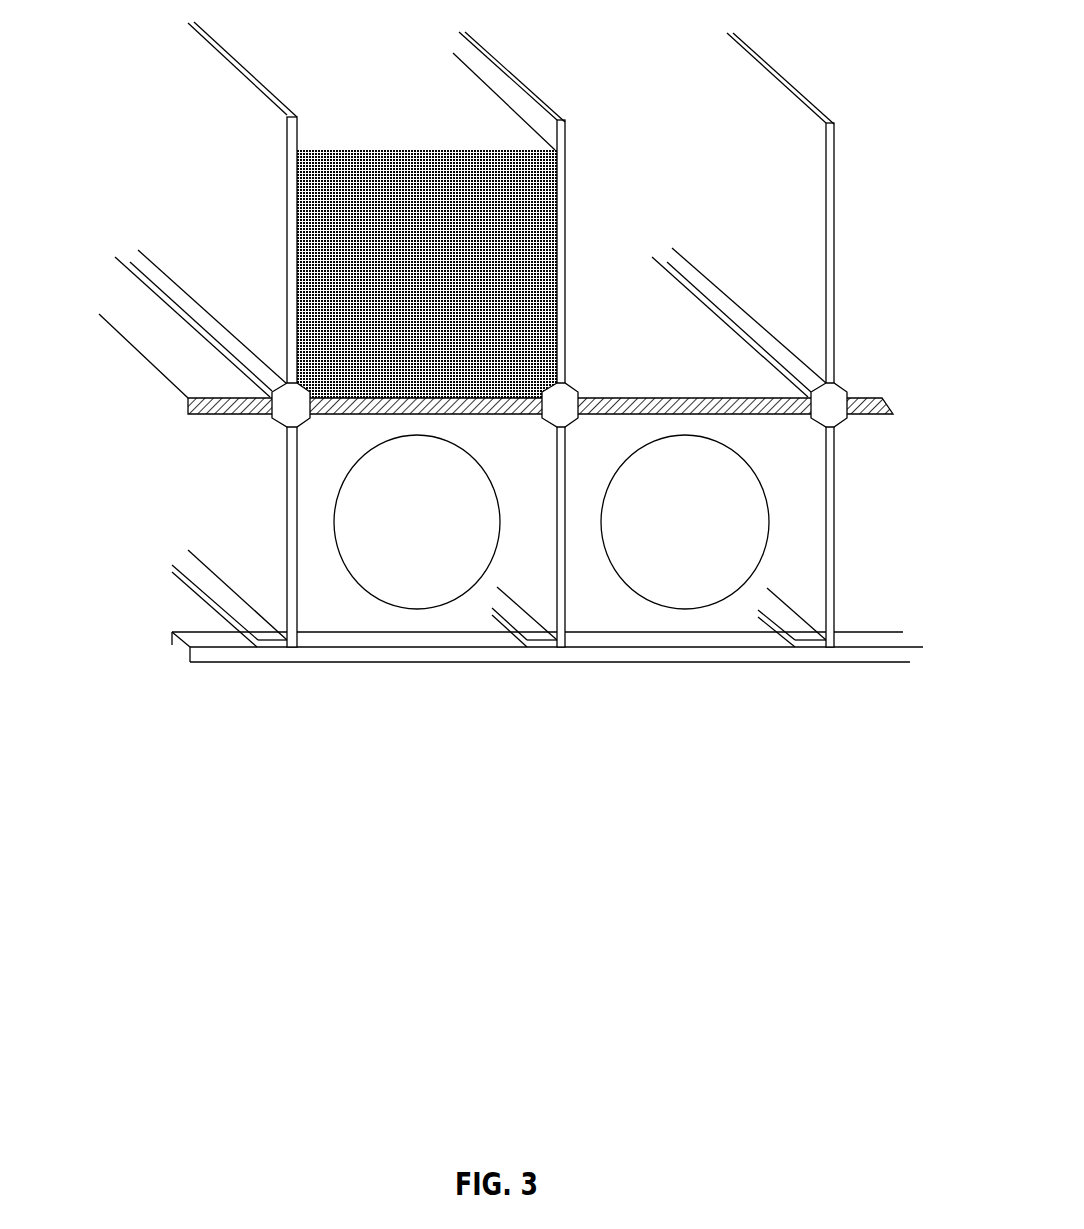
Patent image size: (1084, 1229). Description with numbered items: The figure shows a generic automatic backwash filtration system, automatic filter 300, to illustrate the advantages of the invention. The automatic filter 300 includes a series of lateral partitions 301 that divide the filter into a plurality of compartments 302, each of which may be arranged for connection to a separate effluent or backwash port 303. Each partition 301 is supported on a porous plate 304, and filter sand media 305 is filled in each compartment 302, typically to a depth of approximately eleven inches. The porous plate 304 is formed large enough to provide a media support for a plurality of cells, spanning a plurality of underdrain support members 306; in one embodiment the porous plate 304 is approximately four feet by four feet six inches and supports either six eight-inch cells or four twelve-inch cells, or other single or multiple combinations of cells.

The automatic filter 300 is at (498, 390).
The lateral partitions 301 is at (833, 143).
The compartments 302 is at (683, 178).
The effluent or backwash port 303 is at (370, 528).
The porous plate 304 is at (672, 395).
The filter sand media 305 is at (435, 237).
The underdrain support members 306 is at (558, 608).